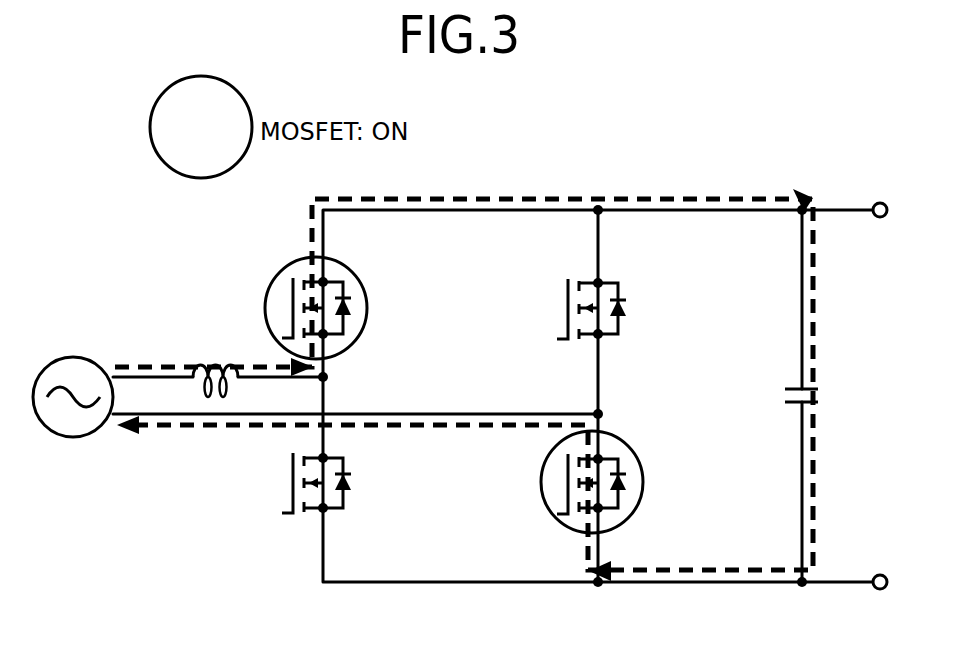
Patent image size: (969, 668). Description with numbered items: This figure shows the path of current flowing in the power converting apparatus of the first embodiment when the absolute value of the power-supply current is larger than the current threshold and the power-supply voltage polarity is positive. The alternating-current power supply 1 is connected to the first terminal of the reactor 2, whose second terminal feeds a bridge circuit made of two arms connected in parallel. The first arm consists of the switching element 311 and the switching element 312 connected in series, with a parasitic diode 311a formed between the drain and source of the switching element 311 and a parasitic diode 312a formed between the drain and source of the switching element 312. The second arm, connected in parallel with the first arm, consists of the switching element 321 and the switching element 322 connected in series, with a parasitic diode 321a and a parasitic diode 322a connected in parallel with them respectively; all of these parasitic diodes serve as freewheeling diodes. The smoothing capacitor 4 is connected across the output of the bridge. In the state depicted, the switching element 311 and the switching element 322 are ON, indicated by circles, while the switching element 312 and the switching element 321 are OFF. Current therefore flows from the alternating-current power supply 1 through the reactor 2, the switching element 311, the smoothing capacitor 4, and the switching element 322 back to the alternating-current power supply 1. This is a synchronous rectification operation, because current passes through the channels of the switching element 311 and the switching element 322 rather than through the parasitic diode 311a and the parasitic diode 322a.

The alternating-current power supply 1 is at (72, 356).
The reactor 2 is at (214, 357).
The switching element 311 is at (339, 289).
The parasitic diode 311a is at (345, 297).
The switching element 312 is at (339, 514).
The parasitic diode 312a is at (345, 470).
The switching element 321 is at (616, 279).
The parasitic diode 321a is at (620, 297).
The switching element 322 is at (603, 485).
The parasitic diode 322a is at (620, 470).
The smoothing capacitor 4 is at (798, 389).